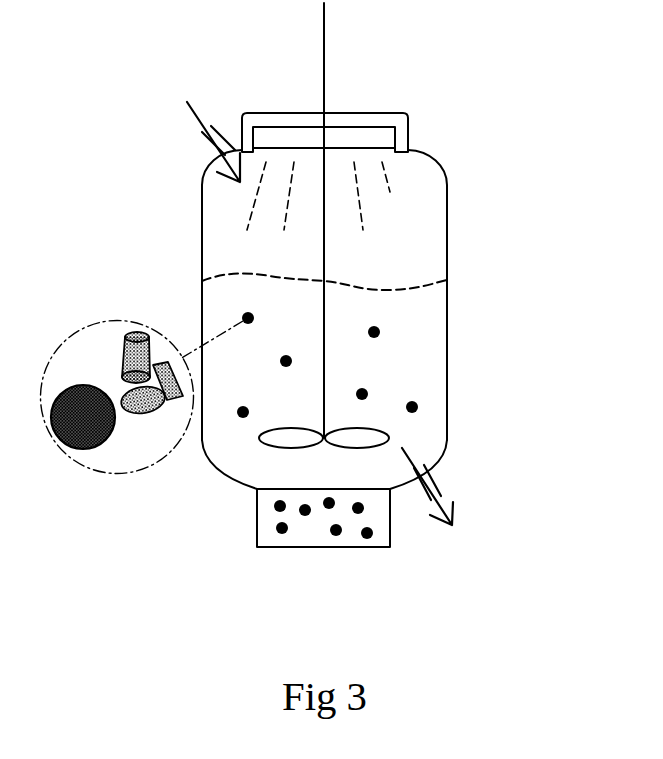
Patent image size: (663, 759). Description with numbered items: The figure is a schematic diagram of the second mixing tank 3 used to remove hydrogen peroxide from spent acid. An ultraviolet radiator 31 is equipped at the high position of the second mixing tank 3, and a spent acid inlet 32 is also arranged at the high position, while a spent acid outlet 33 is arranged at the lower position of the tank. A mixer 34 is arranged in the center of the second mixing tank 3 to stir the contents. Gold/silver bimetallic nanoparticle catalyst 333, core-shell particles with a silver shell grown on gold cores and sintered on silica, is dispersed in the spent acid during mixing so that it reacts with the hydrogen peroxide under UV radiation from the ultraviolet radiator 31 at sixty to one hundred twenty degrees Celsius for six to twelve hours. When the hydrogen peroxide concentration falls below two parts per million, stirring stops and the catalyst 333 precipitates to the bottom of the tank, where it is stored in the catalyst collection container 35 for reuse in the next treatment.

The second mixing tank 3 is at (601, 69).
The ultraviolet radiator 31 is at (388, 135).
The spent acid inlet 32 is at (202, 139).
The spent acid outlet 33 is at (445, 485).
The mixer 34 is at (324, 365).
The catalyst collection container 35 is at (330, 548).
The gold/silver bimetallic nanoparticle catalyst 333 is at (418, 342).